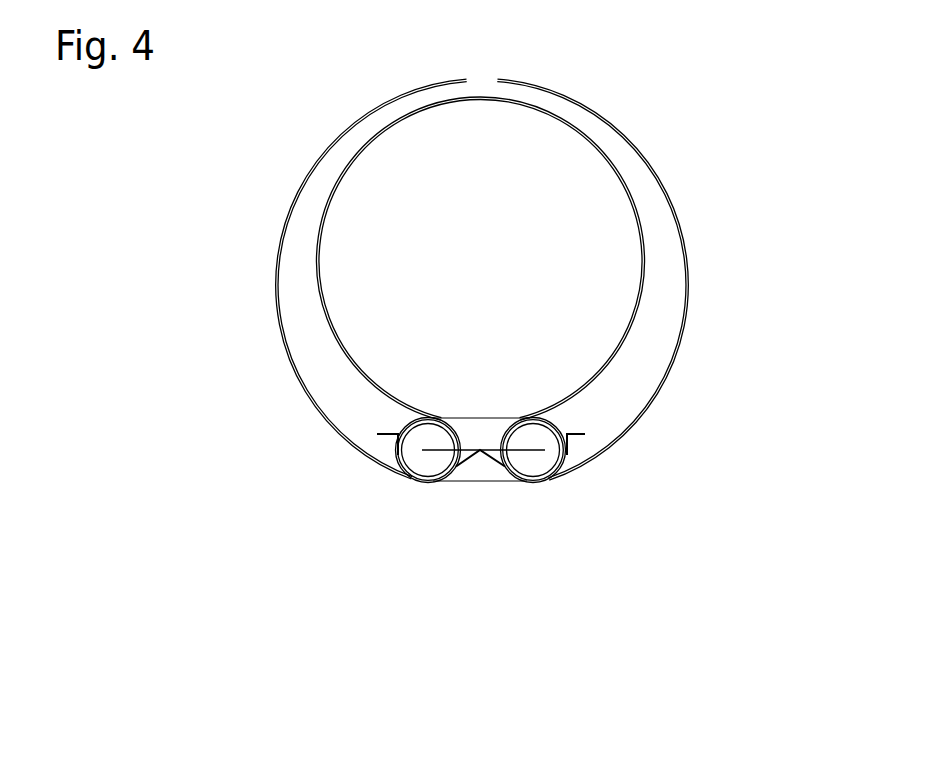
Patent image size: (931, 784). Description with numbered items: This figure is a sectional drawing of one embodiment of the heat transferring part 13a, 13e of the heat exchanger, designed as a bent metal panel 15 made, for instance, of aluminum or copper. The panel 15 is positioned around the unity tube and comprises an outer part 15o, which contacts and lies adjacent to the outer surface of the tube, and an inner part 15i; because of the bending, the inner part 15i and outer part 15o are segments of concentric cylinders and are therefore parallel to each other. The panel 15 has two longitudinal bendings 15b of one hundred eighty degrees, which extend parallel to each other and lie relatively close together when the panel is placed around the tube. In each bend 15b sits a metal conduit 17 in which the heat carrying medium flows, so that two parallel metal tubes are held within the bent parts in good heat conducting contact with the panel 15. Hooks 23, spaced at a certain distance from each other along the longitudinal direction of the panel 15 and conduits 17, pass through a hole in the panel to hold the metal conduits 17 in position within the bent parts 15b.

The heat conducting part 13a is at (427, 358).
The heat conducting part 13e is at (230, 226).
The bent metal panel 15 is at (250, 342).
The outer part 15o is at (658, 182).
The inner part 15i is at (643, 293).
The longitudinal bending 15b is at (520, 480).
The hook 23 is at (493, 460).
The metal conduit 17 is at (551, 464).